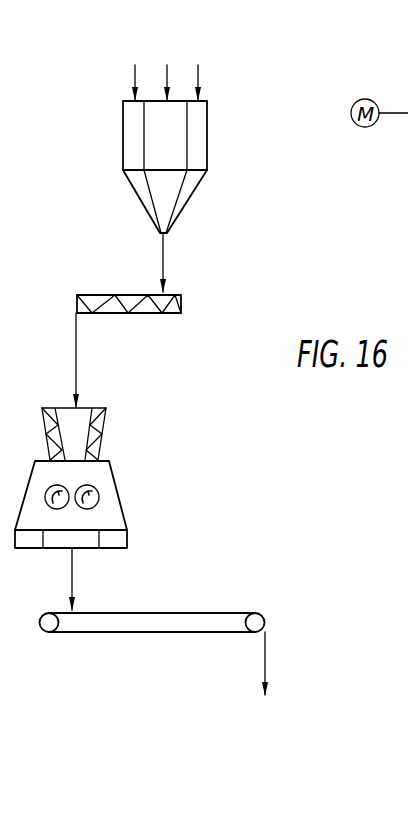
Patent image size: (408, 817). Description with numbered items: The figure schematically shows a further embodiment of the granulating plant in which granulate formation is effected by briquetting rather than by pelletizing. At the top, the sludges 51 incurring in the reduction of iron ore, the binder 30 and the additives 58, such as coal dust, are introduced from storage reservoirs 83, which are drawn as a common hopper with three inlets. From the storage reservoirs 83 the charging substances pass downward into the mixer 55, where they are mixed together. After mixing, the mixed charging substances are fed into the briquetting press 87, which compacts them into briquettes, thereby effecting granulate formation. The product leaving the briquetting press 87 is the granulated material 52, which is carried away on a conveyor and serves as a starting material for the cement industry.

The additives 58 is at (135, 65).
The sludges 51 is at (167, 65).
The binder 30 is at (198, 67).
The storage reservoirs 83 is at (166, 200).
The mixer 55 is at (138, 300).
The briquetting press 87 is at (100, 474).
The granulated material 52 is at (72, 578).